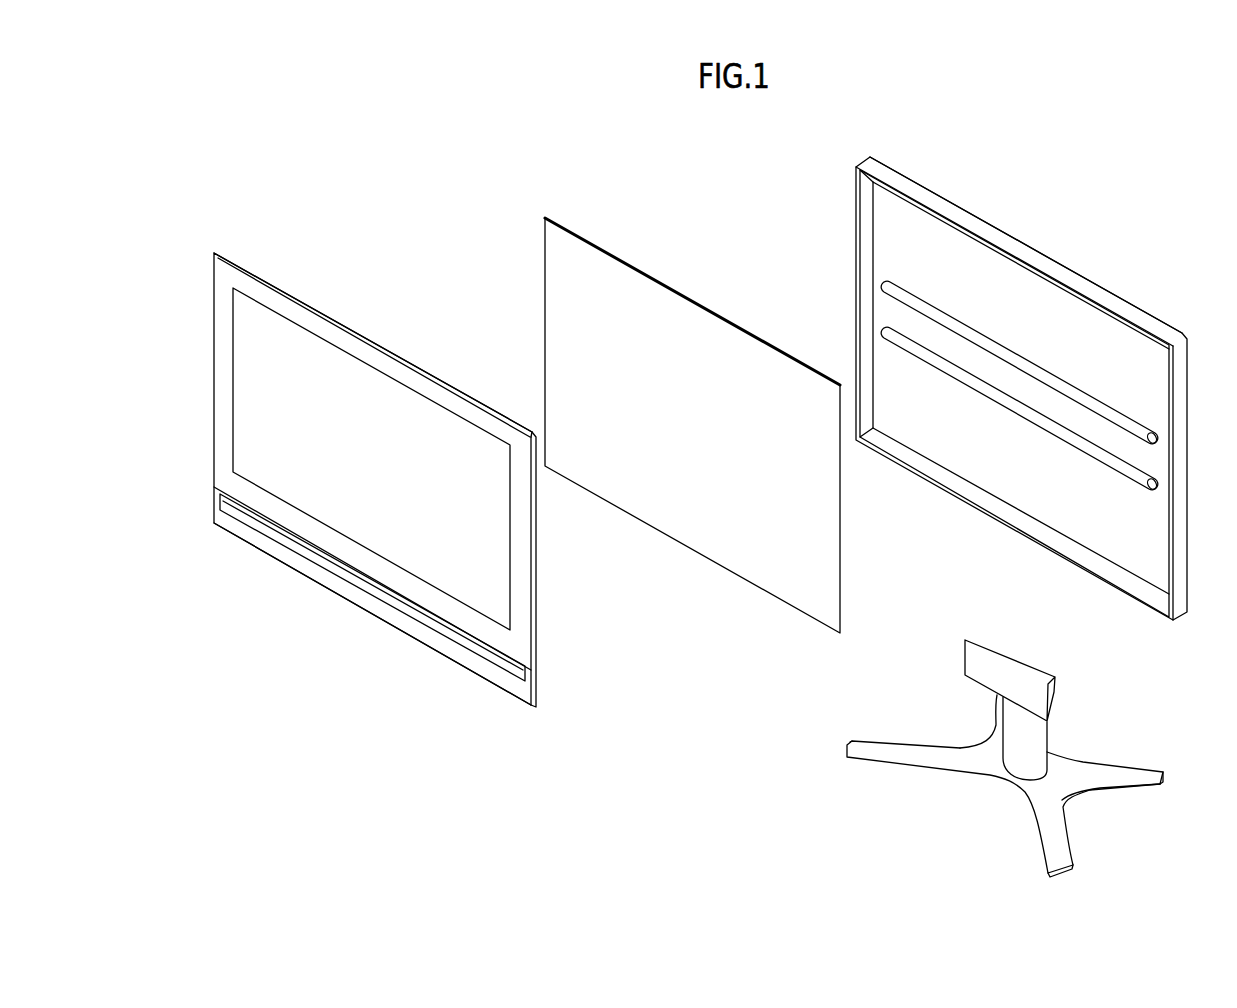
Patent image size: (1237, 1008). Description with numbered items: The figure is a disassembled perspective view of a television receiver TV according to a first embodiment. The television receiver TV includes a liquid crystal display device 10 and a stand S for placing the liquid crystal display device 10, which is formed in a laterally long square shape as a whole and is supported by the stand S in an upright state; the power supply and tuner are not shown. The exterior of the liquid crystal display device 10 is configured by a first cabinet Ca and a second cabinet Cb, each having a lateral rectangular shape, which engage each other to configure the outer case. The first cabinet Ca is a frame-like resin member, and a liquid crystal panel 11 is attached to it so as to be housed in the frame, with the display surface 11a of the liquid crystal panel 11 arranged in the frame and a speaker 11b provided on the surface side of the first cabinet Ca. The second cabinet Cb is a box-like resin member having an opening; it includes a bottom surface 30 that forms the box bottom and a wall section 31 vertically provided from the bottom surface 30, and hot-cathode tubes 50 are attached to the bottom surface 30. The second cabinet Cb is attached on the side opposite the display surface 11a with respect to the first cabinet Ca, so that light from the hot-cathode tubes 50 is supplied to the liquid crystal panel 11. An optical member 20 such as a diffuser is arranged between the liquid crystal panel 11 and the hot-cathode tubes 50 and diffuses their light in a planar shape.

The television receiver TV is at (263, 119).
The liquid crystal display device 10 is at (455, 196).
The liquid crystal panel 11 is at (255, 382).
The display surface 11a is at (485, 560).
The speaker 11b is at (423, 618).
The first cabinet Ca is at (355, 328).
The optical member 20 is at (602, 250).
The bottom surface 30 is at (904, 220).
The wall section 31 is at (863, 247).
The second cabinet Cb is at (1013, 240).
The hot-cathode tubes 50 is at (1130, 423).
The stand S is at (920, 768).